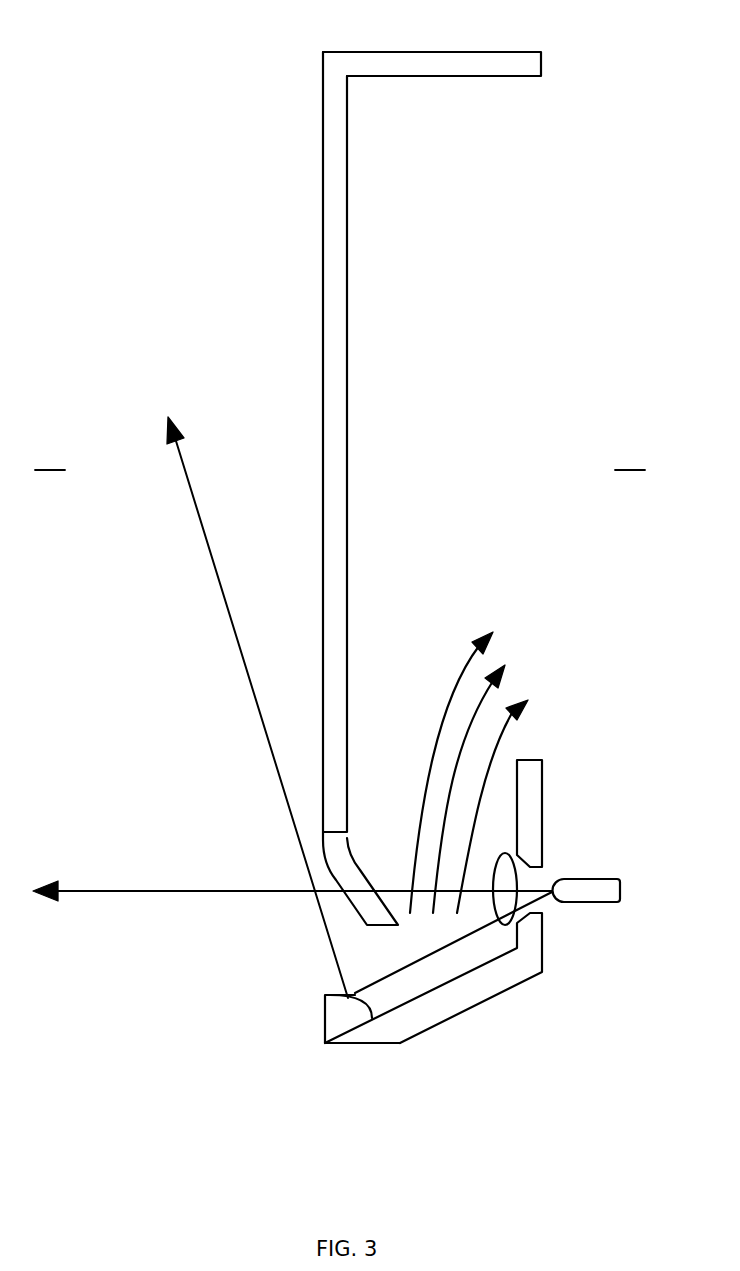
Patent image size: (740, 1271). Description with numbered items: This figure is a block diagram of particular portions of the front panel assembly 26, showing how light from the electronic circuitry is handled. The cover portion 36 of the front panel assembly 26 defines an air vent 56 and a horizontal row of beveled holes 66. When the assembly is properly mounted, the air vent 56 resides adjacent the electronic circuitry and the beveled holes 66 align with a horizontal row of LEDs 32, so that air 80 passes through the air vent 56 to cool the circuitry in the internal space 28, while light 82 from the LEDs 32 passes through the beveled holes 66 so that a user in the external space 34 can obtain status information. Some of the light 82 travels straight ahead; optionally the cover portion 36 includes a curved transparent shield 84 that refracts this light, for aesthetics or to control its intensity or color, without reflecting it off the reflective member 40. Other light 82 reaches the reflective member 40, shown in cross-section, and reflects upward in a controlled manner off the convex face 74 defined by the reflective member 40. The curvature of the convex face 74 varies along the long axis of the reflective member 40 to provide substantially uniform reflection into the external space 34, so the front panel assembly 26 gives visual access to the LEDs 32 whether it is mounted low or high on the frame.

The front panel assembly 26 is at (274, 166).
The cover portion 36 is at (323, 66).
The curved transparent shield 84 is at (351, 858).
The external space 34 is at (50, 458).
The internal space 28 is at (630, 458).
The light 82 is at (505, 853).
The air vent 56 is at (397, 745).
The air 80 is at (448, 680).
The LEDs 32 is at (590, 881).
The beveled holes 66 is at (575, 921).
The reflective member 40 is at (325, 1010).
The convex face 74 is at (328, 975).